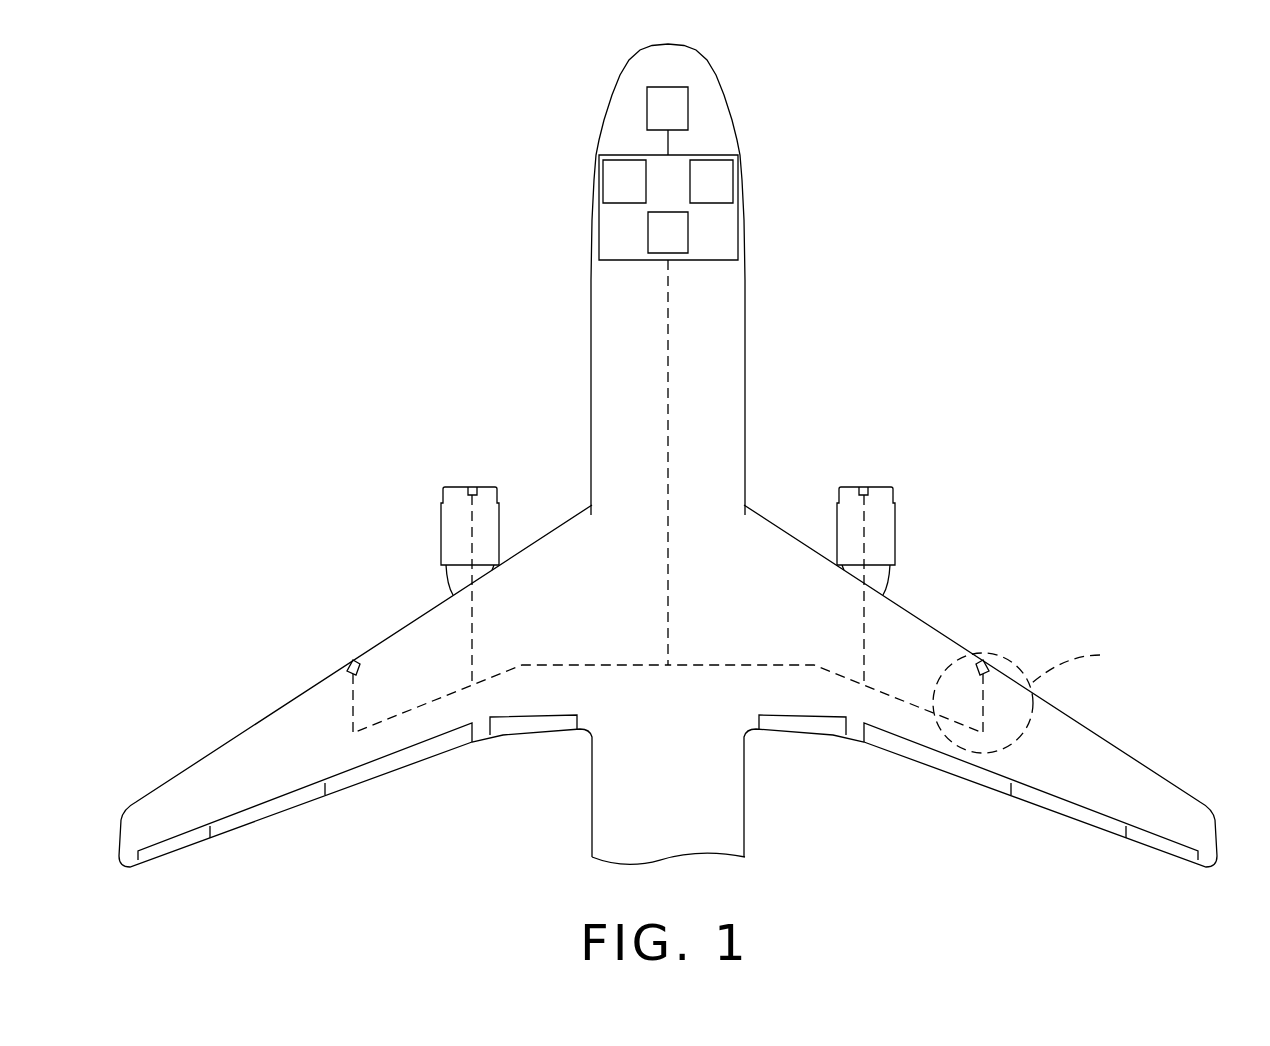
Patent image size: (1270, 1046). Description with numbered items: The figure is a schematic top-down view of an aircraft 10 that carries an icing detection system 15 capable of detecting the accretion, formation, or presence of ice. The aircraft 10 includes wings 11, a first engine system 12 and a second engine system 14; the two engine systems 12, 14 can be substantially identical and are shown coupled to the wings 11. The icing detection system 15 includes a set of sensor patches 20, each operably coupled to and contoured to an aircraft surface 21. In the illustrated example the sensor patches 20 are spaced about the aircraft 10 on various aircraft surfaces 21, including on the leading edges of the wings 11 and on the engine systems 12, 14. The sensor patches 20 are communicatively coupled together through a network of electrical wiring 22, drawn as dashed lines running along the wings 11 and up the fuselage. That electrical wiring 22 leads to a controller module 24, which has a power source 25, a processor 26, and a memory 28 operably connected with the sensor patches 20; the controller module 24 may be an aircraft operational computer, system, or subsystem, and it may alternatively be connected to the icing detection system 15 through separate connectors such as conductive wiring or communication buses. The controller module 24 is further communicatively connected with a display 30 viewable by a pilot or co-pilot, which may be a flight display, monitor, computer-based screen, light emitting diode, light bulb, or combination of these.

The aircraft 10 is at (373, 266).
The wings 11 is at (428, 633).
The first engine system 12 is at (453, 500).
The second engine system 14 is at (877, 500).
The icing detection system 15 is at (952, 780).
The sensor patch 20 is at (479, 490).
The aircraft surface 21 is at (302, 720).
The electrical wiring 22 is at (667, 327).
The controller module 24 is at (684, 195).
The power source 25 is at (668, 232).
The processor 26 is at (640, 195).
The memory 28 is at (727, 195).
The display 30 is at (684, 121).